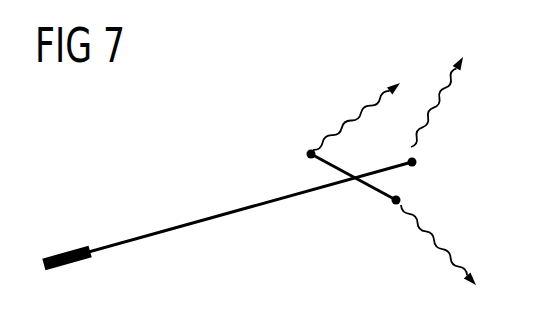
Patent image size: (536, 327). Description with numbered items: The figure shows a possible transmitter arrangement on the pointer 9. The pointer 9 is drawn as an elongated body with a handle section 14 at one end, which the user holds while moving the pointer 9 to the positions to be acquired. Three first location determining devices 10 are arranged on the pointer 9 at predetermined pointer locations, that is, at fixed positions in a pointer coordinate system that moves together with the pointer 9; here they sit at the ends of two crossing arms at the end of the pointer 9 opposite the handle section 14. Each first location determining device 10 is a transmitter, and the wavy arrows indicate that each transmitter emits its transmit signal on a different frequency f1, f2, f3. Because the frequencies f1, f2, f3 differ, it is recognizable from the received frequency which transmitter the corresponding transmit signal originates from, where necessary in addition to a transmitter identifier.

The pointer 9 is at (268, 164).
The first location determining device 10 is at (311, 153).
The handle section 14 is at (65, 248).
The frequency f1 is at (448, 102).
The frequency f2 is at (438, 259).
The frequency f3 is at (356, 103).